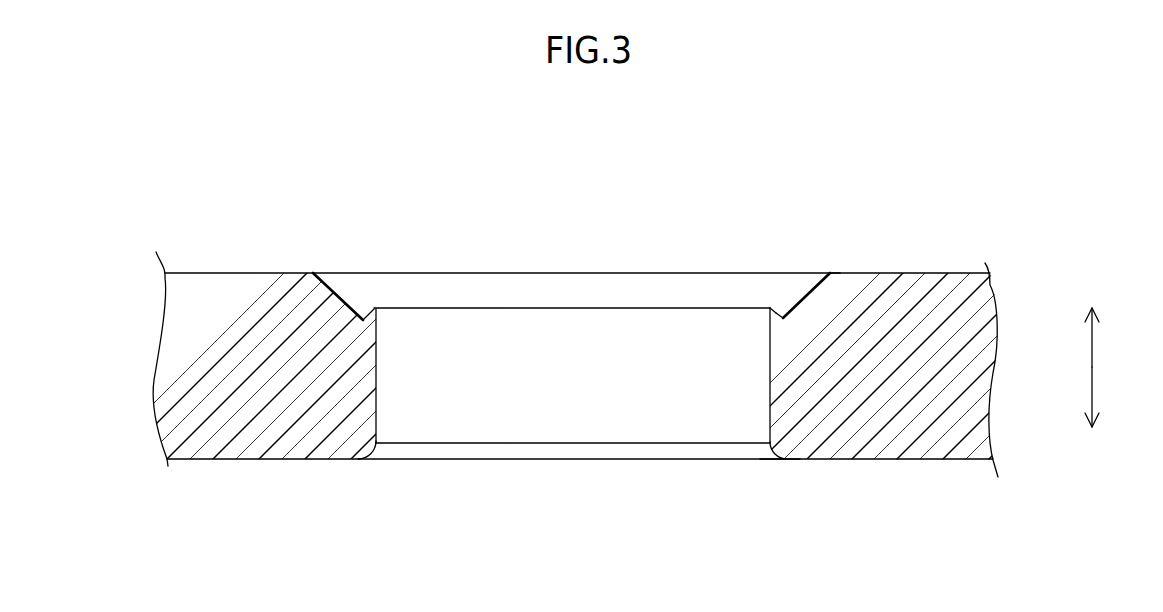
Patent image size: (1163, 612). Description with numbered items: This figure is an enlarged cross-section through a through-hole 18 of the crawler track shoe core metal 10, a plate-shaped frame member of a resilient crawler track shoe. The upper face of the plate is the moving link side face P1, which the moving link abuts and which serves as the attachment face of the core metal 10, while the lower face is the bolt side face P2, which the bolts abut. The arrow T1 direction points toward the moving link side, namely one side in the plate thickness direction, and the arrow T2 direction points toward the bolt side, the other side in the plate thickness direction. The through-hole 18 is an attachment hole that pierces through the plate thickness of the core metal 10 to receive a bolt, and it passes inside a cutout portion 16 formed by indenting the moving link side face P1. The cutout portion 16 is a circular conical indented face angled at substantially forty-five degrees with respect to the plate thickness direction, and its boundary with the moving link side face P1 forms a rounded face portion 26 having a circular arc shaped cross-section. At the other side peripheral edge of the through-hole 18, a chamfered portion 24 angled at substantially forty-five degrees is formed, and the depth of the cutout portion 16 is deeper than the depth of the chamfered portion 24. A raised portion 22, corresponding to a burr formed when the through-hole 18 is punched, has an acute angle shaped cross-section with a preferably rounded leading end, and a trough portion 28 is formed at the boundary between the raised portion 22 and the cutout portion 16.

The crawler track shoe core metal 10 is at (231, 218).
The cutout portion 16 is at (805, 296).
The through-hole 18 is at (382, 322).
The raised portion 22 is at (771, 306).
The chamfered portion 24 is at (770, 460).
The rounded face portion 26 is at (828, 275).
The trough portion 28 is at (784, 317).
The moving link side face P1 is at (919, 273).
The bolt side face P2 is at (890, 460).
The arrow T1 direction T1 is at (1089, 320).
The arrow T2 direction T2 is at (1089, 416).